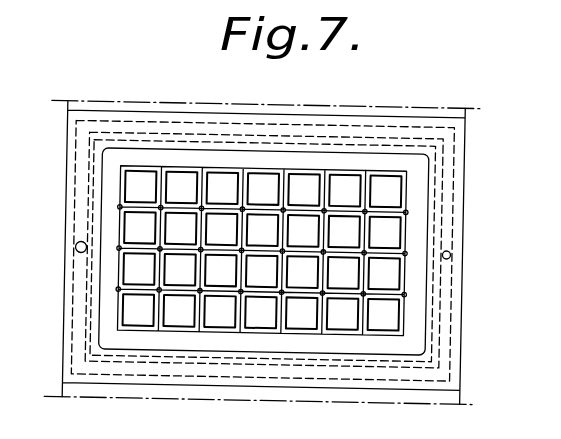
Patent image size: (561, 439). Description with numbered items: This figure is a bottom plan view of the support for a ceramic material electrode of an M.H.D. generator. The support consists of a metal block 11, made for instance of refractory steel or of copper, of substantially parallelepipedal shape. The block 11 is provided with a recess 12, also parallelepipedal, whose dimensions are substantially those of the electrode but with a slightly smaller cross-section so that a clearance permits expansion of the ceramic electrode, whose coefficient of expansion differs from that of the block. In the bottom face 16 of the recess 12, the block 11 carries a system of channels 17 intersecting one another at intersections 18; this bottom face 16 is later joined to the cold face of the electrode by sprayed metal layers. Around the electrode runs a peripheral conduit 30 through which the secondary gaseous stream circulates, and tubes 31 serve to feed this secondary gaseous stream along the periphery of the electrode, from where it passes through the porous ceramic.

The metal block 11 is at (462, 200).
The recess 12 is at (423, 316).
The bottom face of the recess 16 is at (420, 280).
The channels 17 is at (342, 293).
The channel intersections 18 is at (322, 294).
The peripheral conduit 30 is at (78, 339).
The tubes 31 is at (87, 285).